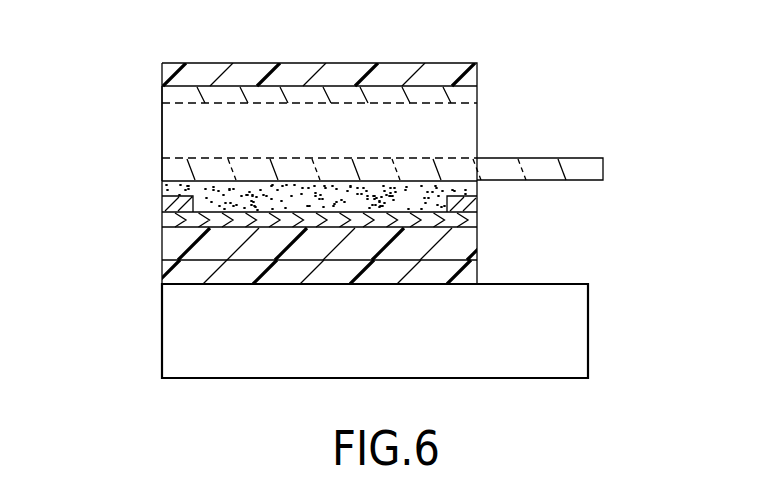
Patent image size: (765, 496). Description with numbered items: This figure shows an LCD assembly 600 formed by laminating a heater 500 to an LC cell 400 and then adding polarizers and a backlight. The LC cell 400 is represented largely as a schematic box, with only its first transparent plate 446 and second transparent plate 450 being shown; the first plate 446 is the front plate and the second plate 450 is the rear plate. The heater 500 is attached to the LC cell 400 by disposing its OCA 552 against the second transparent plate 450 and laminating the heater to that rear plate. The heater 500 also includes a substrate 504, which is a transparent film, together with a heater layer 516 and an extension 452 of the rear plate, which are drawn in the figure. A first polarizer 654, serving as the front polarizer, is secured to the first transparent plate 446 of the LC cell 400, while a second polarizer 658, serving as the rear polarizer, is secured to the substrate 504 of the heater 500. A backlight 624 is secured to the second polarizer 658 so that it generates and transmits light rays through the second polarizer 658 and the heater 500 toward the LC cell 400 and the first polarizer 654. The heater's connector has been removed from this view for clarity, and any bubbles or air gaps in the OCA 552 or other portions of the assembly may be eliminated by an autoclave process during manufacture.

The LCD assembly 600 is at (120, 52).
The first polarizer 654 is at (163, 70).
The first transparent plate 446 is at (170, 97).
The LC cell 400 is at (128, 127).
The second transparent plate 450 is at (168, 161).
The extension of conductive layer 452 is at (417, 182).
The OCA 552 is at (172, 191).
The heater 500 is at (133, 213).
The back contact layer 516 is at (173, 225).
The substrate 504 is at (475, 246).
The second polarizer 658 is at (164, 271).
The backlight 624 is at (164, 325).